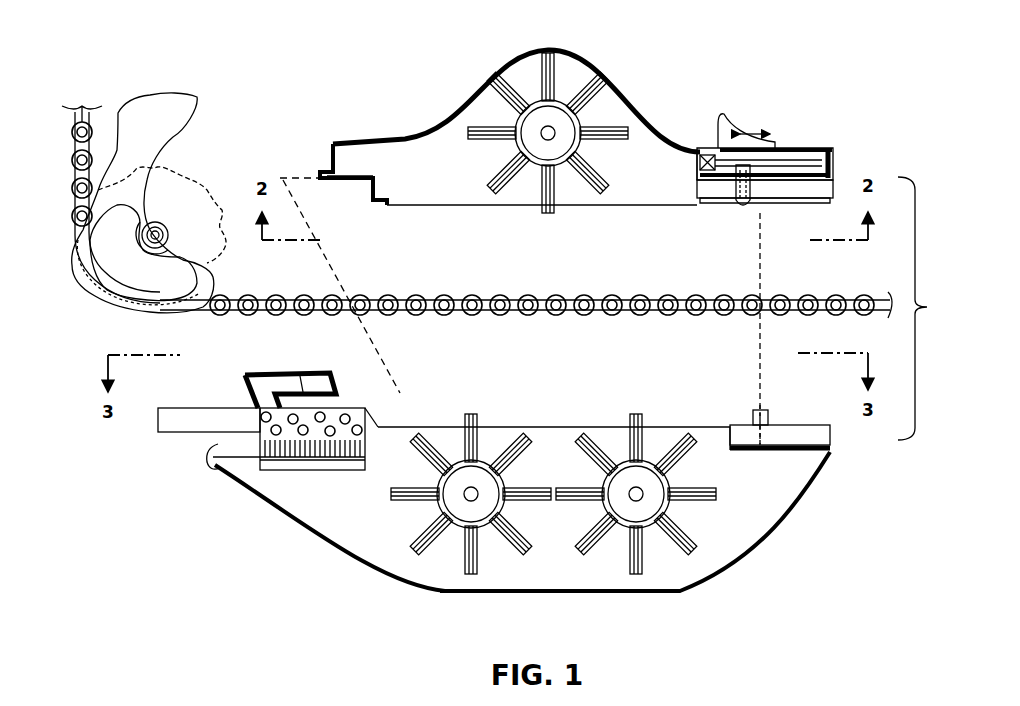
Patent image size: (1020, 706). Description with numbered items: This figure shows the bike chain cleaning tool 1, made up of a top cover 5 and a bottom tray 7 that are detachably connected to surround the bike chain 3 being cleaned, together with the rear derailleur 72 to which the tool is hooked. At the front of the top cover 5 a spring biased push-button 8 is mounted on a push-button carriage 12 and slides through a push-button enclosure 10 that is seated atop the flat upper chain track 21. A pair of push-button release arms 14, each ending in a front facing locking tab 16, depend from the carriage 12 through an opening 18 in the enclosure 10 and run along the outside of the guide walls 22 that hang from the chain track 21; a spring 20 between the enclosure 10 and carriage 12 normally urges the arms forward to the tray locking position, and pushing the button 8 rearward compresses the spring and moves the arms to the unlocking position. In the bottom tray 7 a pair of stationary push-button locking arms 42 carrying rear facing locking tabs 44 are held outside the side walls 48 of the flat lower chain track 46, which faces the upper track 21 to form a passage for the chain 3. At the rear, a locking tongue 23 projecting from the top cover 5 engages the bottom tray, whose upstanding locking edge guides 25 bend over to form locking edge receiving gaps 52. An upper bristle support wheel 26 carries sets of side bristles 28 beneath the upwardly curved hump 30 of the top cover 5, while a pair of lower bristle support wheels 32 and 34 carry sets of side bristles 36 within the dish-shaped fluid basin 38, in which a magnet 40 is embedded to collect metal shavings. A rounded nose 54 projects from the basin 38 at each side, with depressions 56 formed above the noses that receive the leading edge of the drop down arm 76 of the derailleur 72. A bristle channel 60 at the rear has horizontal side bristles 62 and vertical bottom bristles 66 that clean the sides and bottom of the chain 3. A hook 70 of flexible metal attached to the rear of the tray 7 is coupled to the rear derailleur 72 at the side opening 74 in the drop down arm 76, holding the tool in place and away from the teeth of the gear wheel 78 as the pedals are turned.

The bike chain cleaning tool 1 is at (922, 308).
The bike chain 3 is at (475, 296).
The top cover 5 is at (392, 135).
The bottom tray 7 is at (752, 505).
The spring biased push-button 8 is at (722, 122).
The push-button enclosure 10 is at (697, 160).
The push-button carriage 12 is at (770, 150).
The push-button release arms 14 is at (735, 190).
The front facing locking tab 16 is at (742, 210).
The opening 18 is at (778, 180).
The spring 20 is at (708, 155).
The upper chain track 21 is at (790, 165).
The guide walls 22 is at (806, 190).
The locking tongue 23 is at (327, 170).
The locking edge guides 25 is at (257, 372).
The upper bristle support wheel 26 is at (560, 102).
The side bristles 28 is at (508, 80).
The upwardly curved hump 30 is at (546, 50).
The lower bristle support wheel 32 is at (628, 588).
The lower bristle support wheel 34 is at (460, 585).
The side bristles 36 is at (475, 420).
The dish-shaped fluid basin 38 is at (415, 580).
The magnet 40 is at (536, 593).
The push-button locking arms 42 is at (766, 435).
The rear facing locking tab 44 is at (753, 410).
The lower chain track 46 is at (800, 452).
The side walls 48 is at (832, 440).
The locking edge receiving gap 52 is at (300, 374).
The rounded nose 54 is at (212, 470).
The depressions 56 is at (258, 430).
The bristle channel 60 is at (330, 470).
The horizontal side bristles 62 is at (262, 416).
The vertical bottom bristles 66 is at (285, 455).
The hook 70 is at (172, 408).
The rear derailleur 72 is at (204, 107).
The side opening 74 is at (120, 278).
The drop down arm 76 is at (200, 262).
The gear wheel 78 is at (180, 182).